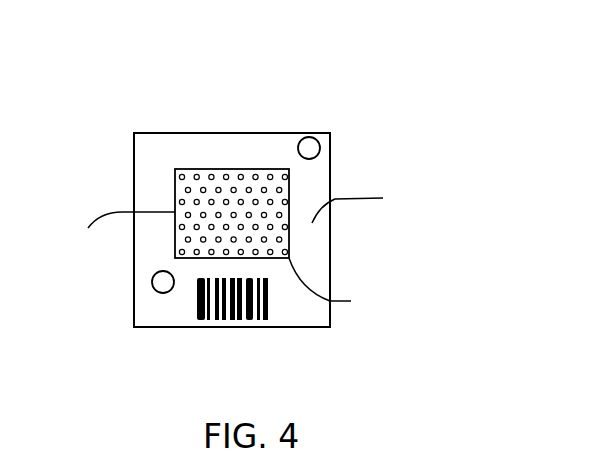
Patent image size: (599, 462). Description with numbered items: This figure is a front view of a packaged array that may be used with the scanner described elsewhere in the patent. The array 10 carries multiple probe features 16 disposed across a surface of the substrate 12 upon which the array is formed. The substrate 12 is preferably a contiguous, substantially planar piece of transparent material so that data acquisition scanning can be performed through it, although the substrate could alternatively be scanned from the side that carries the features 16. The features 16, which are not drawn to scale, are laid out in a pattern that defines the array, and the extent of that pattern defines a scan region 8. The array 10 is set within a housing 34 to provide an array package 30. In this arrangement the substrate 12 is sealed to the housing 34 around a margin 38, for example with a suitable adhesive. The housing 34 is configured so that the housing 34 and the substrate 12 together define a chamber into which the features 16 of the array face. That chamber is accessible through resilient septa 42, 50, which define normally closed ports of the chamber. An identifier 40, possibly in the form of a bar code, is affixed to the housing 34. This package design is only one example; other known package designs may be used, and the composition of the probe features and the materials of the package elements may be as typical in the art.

The array 10 is at (211, 114).
The substrate 12 is at (249, 168).
The scan region 8 is at (289, 193).
The probe features 16 is at (332, 286).
The array package 30 is at (354, 258).
The housing 34 is at (361, 205).
The margin 38 is at (121, 231).
The identifier 40 is at (206, 317).
The resilient septum 42 is at (167, 281).
The resilient septum 50 is at (312, 134).